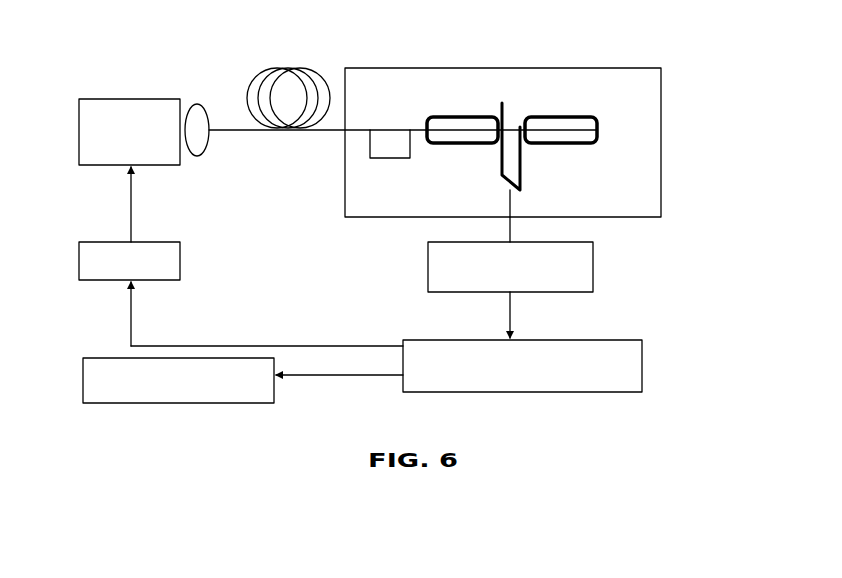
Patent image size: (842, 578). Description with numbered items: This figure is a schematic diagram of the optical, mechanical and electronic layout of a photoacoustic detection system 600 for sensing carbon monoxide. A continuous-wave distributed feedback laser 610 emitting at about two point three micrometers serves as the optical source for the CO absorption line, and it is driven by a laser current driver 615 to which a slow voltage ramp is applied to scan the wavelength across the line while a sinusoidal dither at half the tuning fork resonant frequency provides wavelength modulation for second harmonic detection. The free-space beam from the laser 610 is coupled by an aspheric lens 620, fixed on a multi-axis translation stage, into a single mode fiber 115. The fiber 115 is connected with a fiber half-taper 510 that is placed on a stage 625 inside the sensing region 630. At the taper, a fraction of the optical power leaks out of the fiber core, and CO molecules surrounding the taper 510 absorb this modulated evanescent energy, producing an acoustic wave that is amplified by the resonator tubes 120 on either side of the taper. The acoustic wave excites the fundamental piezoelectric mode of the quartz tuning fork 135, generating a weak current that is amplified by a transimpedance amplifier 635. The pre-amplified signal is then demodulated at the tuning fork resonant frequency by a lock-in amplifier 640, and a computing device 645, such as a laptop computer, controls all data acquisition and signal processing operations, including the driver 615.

The optical system 600 is at (667, 335).
The distributed feedback laser 610 is at (135, 99).
The laser current driver 615 is at (104, 242).
The aspheric lens 620 is at (200, 105).
The single mode fiber 115 is at (270, 134).
The stage 625 is at (376, 159).
The optical assembly enclosure 630 is at (347, 218).
The resonator tubes 120 is at (441, 115).
The fiber half-taper 510 is at (520, 124).
The quartz tuning fork 135 is at (526, 170).
The transimpedance amplifier 635 is at (601, 262).
The lock-in amplifier 640 is at (431, 340).
The computing device 645 is at (111, 358).